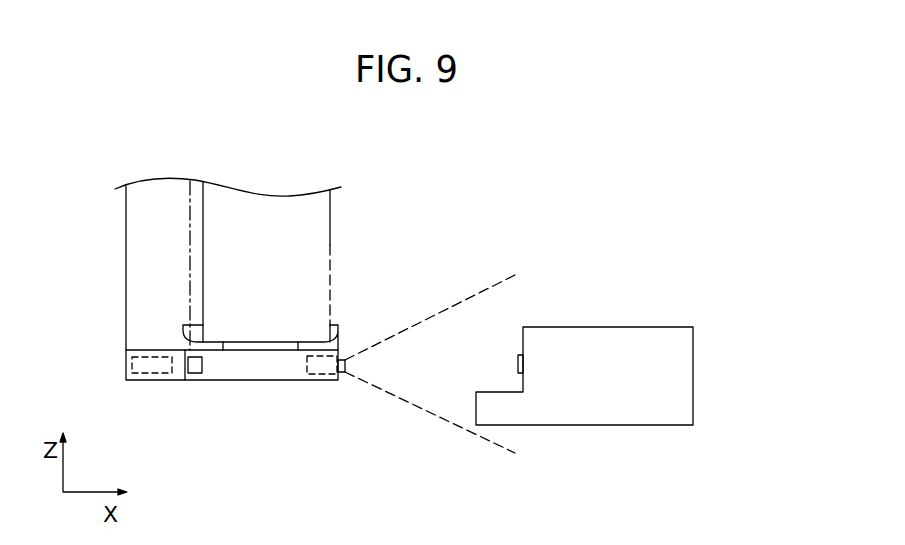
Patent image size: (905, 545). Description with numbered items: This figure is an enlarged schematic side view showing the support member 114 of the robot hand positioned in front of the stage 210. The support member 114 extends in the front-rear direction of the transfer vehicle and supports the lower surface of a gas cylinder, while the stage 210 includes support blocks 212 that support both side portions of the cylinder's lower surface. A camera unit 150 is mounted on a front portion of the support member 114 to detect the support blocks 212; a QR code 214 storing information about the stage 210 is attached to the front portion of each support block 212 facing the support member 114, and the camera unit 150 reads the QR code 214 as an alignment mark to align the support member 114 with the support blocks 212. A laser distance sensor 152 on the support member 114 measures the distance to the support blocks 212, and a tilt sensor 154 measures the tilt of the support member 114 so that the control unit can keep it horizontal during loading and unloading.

The support member 114 is at (258, 370).
The camera unit 150 is at (328, 368).
The distance sensor 152 is at (197, 366).
The tilt sensor 154 is at (132, 364).
The stage 210 is at (615, 335).
The support block 212 is at (683, 358).
The QR code 214 is at (518, 360).